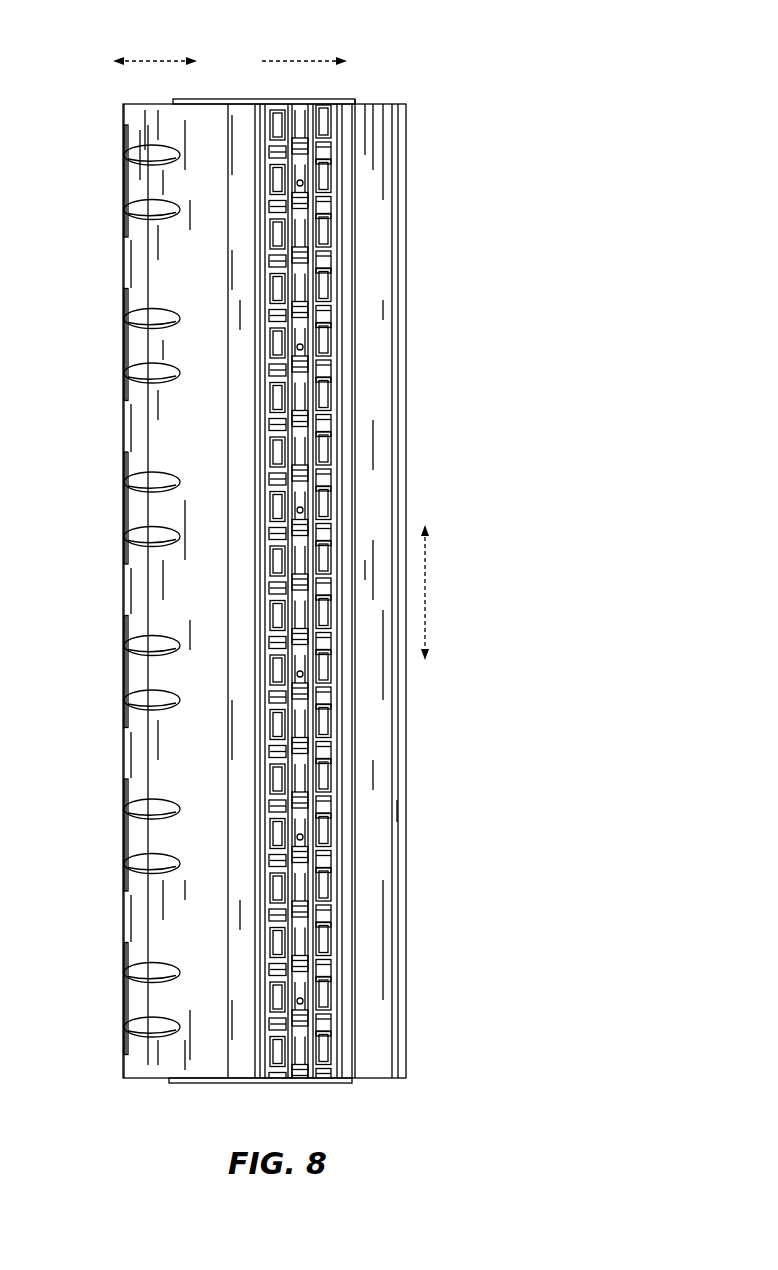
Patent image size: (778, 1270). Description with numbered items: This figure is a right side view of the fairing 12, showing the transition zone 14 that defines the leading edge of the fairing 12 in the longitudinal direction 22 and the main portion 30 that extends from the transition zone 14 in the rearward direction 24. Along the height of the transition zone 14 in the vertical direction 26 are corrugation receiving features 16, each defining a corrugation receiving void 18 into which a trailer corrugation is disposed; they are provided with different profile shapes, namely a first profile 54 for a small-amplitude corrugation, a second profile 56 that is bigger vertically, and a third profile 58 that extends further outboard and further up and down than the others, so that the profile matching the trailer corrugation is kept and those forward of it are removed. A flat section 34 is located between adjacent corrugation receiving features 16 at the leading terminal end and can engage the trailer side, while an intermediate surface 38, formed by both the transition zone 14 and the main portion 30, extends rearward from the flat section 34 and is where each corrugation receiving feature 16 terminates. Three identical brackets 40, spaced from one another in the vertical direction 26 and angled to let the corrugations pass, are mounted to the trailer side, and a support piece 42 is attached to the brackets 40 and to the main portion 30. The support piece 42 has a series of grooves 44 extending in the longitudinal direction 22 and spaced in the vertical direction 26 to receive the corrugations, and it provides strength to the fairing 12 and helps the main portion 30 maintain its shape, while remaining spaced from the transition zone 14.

The fairing 12 is at (96, 44).
The transition zone 14 is at (133, 1066).
The corrugation receiving features 16 is at (133, 863).
The corrugation receiving void 18 is at (133, 808).
The longitudinal direction 22 is at (153, 60).
The rearward direction 24 is at (305, 60).
The vertical direction 26 is at (425, 590).
The main portion 30 is at (205, 1066).
The flat section 34 is at (133, 597).
The intermediate surface 38 is at (150, 912).
The brackets 40 is at (300, 270).
The support piece 42 is at (320, 865).
The grooves 44 is at (320, 808).
The first profile 54 is at (125, 705).
The second profile 56 is at (128, 700).
The third profile 58 is at (148, 698).